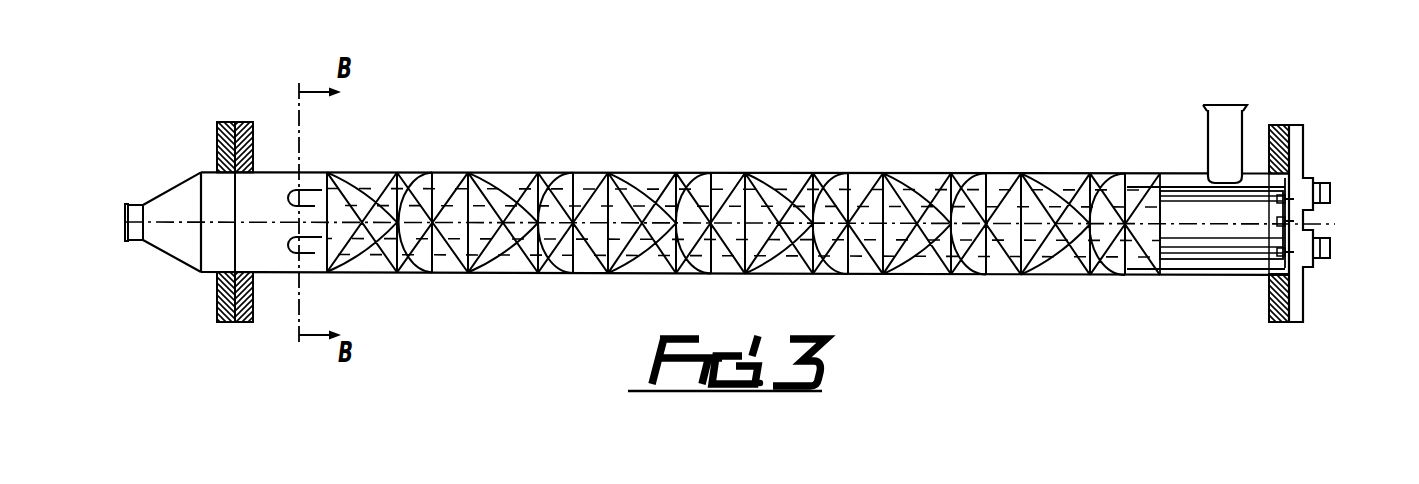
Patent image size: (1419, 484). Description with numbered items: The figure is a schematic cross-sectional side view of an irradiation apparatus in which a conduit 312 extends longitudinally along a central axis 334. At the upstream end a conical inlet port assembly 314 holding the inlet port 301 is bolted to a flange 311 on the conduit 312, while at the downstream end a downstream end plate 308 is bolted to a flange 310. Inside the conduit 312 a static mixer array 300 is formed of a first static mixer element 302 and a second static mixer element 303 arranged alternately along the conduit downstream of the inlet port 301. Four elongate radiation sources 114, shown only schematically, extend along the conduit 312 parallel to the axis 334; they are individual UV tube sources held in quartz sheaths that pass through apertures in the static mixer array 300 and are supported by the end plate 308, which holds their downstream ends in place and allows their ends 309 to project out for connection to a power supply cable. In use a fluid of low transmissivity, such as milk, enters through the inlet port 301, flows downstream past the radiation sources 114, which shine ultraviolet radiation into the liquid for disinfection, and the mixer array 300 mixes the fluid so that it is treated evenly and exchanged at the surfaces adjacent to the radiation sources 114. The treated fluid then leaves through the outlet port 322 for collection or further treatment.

The static mixer array 300 is at (712, 208).
The inlet port 301 is at (113, 212).
The first static mixer element 302 is at (480, 180).
The second static mixer element 303 is at (422, 182).
The end plate 308 is at (1303, 160).
The ends of the radiation sources 309 is at (1331, 247).
The flange 310 is at (1281, 126).
The flange 311 is at (243, 121).
The conduit 312 is at (313, 172).
The conical inlet port assembly 314 is at (177, 183).
The outlet port 322 is at (1228, 103).
The central axis 334 is at (190, 224).
The radiation sources 114 is at (315, 195).